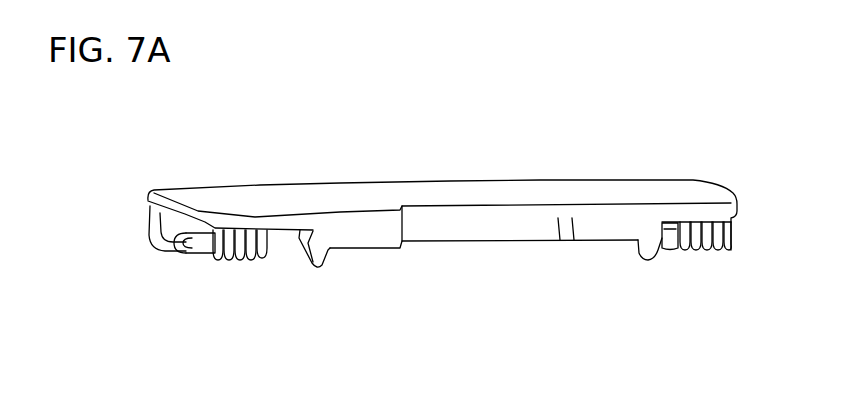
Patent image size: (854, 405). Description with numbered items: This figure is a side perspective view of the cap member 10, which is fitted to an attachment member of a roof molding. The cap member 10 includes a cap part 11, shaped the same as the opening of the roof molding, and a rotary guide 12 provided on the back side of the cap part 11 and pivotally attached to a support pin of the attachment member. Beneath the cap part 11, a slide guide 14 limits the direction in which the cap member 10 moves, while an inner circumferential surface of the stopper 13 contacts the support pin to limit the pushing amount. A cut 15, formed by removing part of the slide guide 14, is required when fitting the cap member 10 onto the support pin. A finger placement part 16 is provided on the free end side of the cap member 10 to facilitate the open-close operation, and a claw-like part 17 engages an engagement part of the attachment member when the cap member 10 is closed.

The cap member 10 is at (685, 131).
The cap part 11 is at (508, 197).
The rotary guide 12 is at (150, 223).
The stopper 13 is at (246, 262).
The slide guide 14 is at (205, 258).
The cut 15 is at (188, 252).
The finger placement part 16 is at (475, 225).
The claw-like part 17 is at (317, 250).